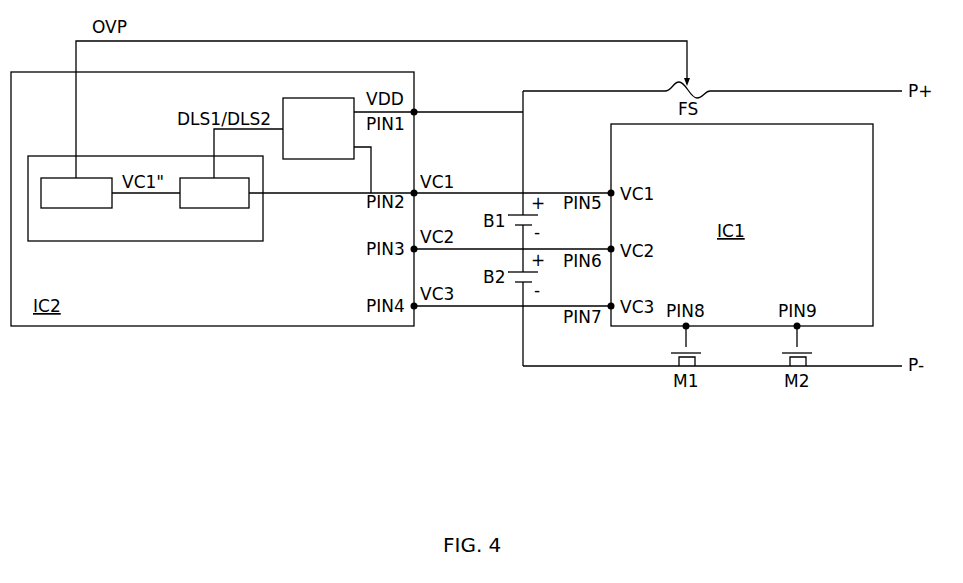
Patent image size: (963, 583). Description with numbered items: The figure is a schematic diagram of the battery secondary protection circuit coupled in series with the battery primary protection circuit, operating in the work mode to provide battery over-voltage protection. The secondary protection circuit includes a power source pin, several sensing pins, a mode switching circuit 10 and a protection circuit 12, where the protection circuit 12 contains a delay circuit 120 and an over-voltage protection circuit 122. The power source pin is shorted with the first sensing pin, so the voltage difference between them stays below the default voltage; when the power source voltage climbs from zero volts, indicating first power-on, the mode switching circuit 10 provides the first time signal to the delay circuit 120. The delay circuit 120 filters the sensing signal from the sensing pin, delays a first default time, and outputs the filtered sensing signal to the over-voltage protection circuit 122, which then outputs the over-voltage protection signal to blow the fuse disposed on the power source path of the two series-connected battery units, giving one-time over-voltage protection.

The mode switching circuit 10 is at (318, 128).
The protection circuit 12 is at (145, 198).
The delay circuit 120 is at (214, 193).
The over-voltage protection circuit 122 is at (76, 193).